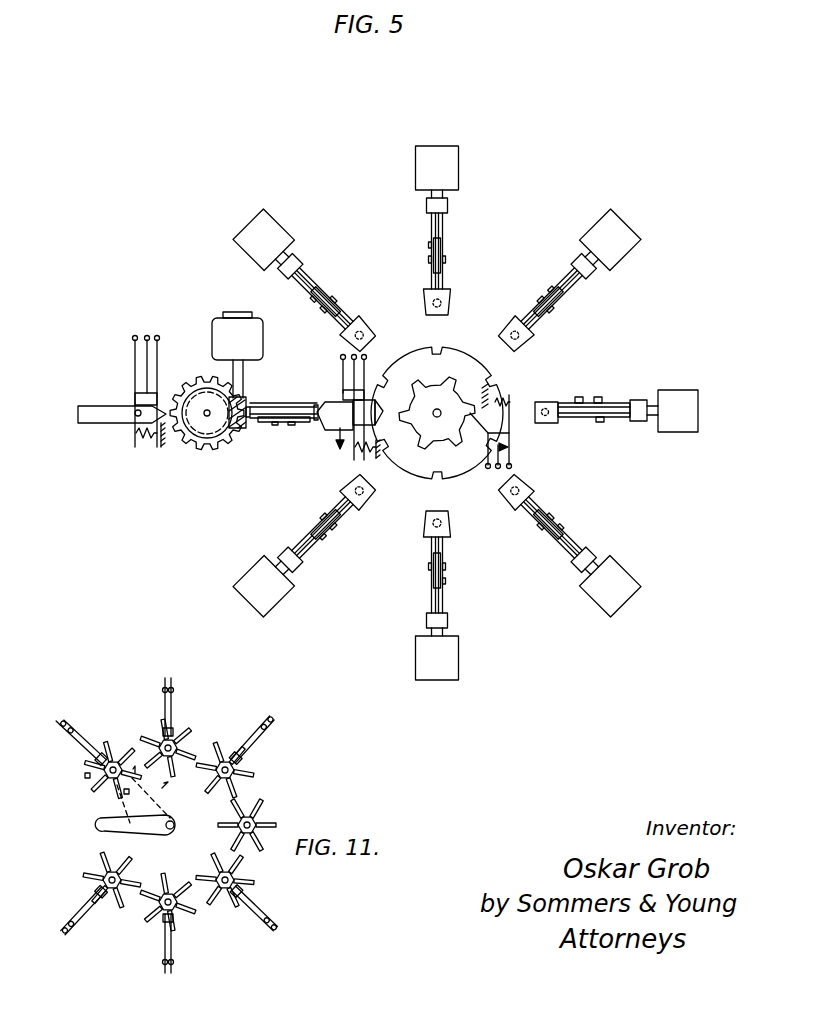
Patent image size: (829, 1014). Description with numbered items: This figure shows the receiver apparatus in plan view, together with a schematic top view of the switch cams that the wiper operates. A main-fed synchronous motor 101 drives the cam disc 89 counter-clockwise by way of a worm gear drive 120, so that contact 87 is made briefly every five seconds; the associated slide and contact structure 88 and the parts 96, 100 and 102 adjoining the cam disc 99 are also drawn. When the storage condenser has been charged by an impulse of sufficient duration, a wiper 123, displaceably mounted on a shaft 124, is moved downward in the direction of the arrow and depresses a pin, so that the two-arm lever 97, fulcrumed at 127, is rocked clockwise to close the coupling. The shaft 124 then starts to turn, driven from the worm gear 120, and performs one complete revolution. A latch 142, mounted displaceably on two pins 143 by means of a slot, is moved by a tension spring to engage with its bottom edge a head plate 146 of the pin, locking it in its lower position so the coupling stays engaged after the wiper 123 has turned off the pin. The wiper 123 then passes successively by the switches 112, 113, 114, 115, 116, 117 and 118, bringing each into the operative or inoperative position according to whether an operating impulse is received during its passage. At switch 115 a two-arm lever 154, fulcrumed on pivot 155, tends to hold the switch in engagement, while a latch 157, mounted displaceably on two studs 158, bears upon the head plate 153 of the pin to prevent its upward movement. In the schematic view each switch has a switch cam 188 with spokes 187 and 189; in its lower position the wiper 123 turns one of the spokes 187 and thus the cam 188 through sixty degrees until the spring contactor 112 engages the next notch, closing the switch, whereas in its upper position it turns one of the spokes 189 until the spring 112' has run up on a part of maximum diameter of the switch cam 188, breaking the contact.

In FIG. 5, the contact 87 is at (142, 382).
In FIG. 5, the slide rod 88 is at (158, 364).
In FIG. 5, the cam disc 89 is at (198, 452).
In FIG. 5, the stop pawl 96 is at (351, 382).
In FIG. 5, the two-arm lever 97 is at (255, 405).
In FIG. 5, the cam disc 99 is at (437, 413).
In FIG. 5, the indexing wheel 100 is at (437, 413).
In FIG. 5, the synchronous motor 101 is at (237, 355).
In FIG. 5, the detent 102 is at (512, 457).
In FIG. 5, the switch 112 is at (308, 542).
In FIG. 11, the switch 112 is at (81, 742).
In FIG. 11, the spring 112' is at (39, 734).
In FIG. 5, the switch 113 is at (437, 595).
In FIG. 11, the switch 113 is at (171, 720).
In FIG. 5, the switch 114 is at (566, 542).
In FIG. 11, the switch 114 is at (230, 750).
In FIG. 5, the switch 115 is at (678, 411).
In FIG. 5, the switch 116 is at (566, 284).
In FIG. 11, the switch 116 is at (244, 892).
In FIG. 5, the switch 117 is at (437, 230).
In FIG. 11, the switch 117 is at (177, 929).
In FIG. 5, the switch 118 is at (308, 284).
In FIG. 11, the switch 118 is at (97, 908).
In FIG. 5, the worm gear drive 120 is at (207, 413).
In FIG. 5, the wiper 123 is at (350, 415).
In FIG. 11, the wiper 123 is at (118, 821).
In FIG. 5, the shaft 124 is at (437, 418).
In FIG. 11, the shaft 124 is at (168, 821).
In FIG. 5, the fulcrum 127 is at (272, 405).
In FIG. 5, the latch 142 is at (312, 422).
In FIG. 5, the pins 143 is at (291, 424).
In FIG. 5, the head plate 146 is at (318, 403).
In FIG. 5, the head plate 153 is at (543, 404).
In FIG. 5, the two-arm lever 154 is at (634, 404).
In FIG. 5, the pivot 155 is at (601, 423).
In FIG. 5, the latch 157 is at (569, 403).
In FIG. 5, the studs 158 is at (590, 399).
In FIG. 11, the spokes 187 is at (90, 778).
In FIG. 11, the switch cam 188 is at (120, 763).
In FIG. 11, the spokes 189 is at (91, 752).